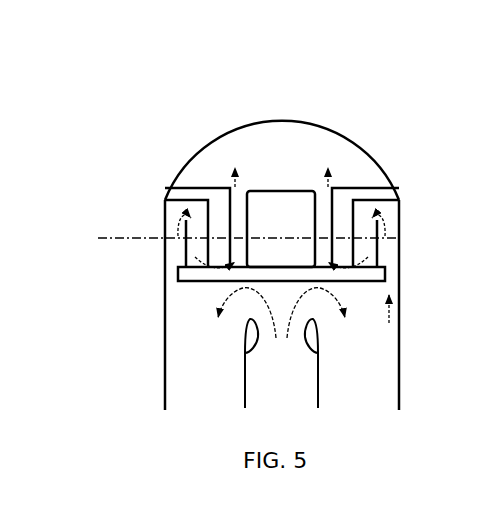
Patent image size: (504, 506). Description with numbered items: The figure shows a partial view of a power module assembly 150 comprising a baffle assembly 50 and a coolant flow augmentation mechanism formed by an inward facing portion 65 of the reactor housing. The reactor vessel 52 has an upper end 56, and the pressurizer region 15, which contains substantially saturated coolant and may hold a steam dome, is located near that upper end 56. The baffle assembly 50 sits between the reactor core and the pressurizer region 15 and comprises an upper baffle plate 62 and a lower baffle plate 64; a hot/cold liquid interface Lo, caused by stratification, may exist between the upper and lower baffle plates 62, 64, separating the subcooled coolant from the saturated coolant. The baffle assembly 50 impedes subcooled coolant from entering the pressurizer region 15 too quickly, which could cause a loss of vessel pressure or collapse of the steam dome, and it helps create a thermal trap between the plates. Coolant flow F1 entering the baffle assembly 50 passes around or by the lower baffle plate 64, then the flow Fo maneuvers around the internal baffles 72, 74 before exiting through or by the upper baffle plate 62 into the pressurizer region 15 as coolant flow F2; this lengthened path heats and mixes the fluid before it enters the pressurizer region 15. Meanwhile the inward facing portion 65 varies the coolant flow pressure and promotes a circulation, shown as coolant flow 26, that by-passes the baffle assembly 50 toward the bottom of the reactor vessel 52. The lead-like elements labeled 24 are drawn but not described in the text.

The power module assembly 150 is at (236, 88).
The baffle assembly 50 is at (156, 173).
The reactor vessel 52 is at (355, 141).
The upper end 56 is at (221, 135).
The pressurizer region 15 is at (292, 132).
The upper baffle plate 62 is at (220, 182).
The internal baffle 72 is at (220, 211).
The internal baffle 74 is at (377, 252).
The lower baffle plate 64 is at (207, 288).
The coolant flow 26 is at (207, 317).
The inward facing portion 65 is at (322, 325).
The lead wires 24 is at (322, 365).
The hot/cold liquid interface Lo is at (236, 238).
The coolant flow F1 is at (399, 312).
The coolant flow F2 is at (333, 175).
The coolant flow Fo is at (387, 212).